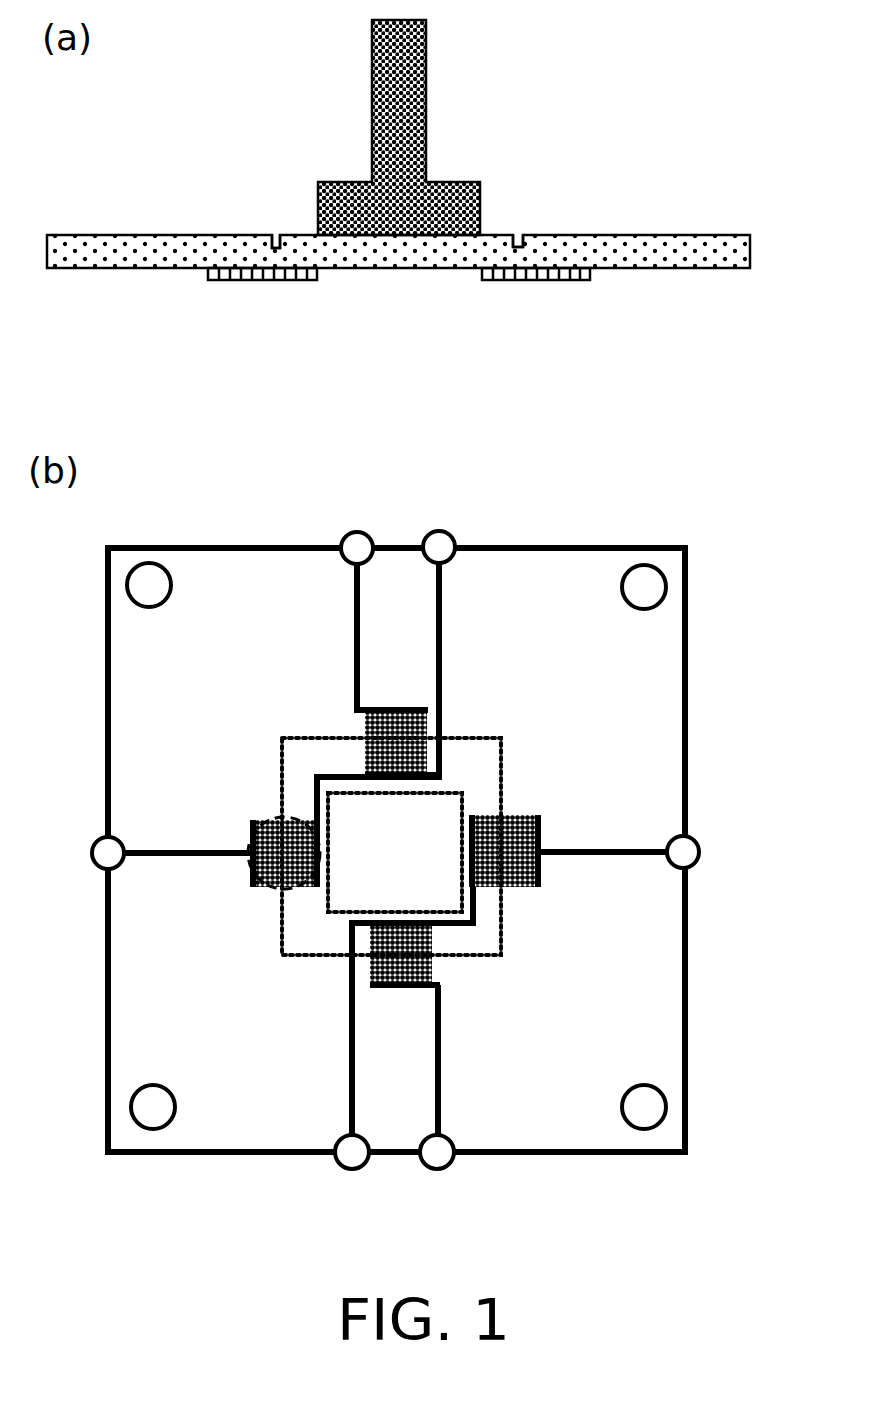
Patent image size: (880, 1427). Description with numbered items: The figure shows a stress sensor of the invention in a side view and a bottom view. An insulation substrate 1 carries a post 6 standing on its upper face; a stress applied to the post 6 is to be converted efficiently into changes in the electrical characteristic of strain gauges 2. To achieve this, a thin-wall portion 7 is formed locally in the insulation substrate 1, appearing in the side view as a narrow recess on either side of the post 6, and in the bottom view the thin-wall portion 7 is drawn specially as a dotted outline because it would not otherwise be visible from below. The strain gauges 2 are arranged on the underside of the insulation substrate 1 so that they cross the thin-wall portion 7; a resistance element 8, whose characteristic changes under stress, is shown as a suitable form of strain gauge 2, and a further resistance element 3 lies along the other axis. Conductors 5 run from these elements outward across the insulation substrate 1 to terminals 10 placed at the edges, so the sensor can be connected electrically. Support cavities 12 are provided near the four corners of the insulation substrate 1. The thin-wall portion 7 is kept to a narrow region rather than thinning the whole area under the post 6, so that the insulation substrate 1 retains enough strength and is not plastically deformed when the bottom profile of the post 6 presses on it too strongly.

The insulation substrate 1 is at (637, 245).
The strain gauge 2 is at (580, 282).
The resistance element 3 is at (362, 712).
The conductor 5 is at (652, 848).
The post 6 is at (425, 108).
The thin-wall portion 7 is at (518, 233).
The resistance element 8 is at (283, 892).
The terminal 10 is at (683, 855).
The support cavity 12 is at (637, 588).